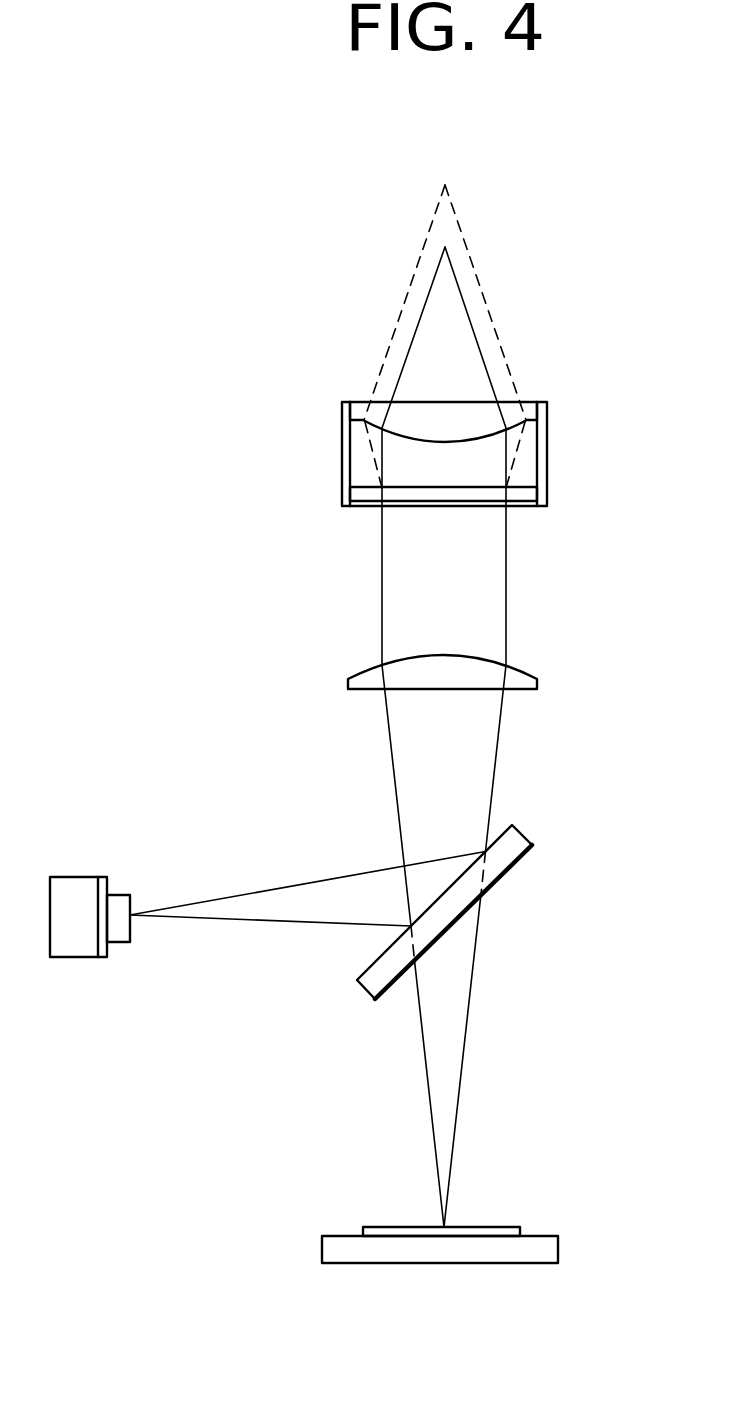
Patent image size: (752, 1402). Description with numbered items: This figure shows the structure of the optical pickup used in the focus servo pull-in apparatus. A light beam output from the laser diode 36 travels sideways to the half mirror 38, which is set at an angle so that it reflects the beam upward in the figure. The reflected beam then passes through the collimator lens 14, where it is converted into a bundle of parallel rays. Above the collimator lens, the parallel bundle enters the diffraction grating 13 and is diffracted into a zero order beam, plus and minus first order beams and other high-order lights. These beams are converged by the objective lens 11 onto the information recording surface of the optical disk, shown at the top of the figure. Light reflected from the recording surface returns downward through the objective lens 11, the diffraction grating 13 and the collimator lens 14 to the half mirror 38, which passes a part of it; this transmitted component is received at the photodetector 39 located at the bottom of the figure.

The objective lens 11 is at (532, 412).
The diffraction grating 13 is at (527, 496).
The collimator lens 14 is at (538, 682).
The laser diode 36 is at (90, 877).
The half mirror 38 is at (529, 842).
The photodetector 39 is at (558, 1236).